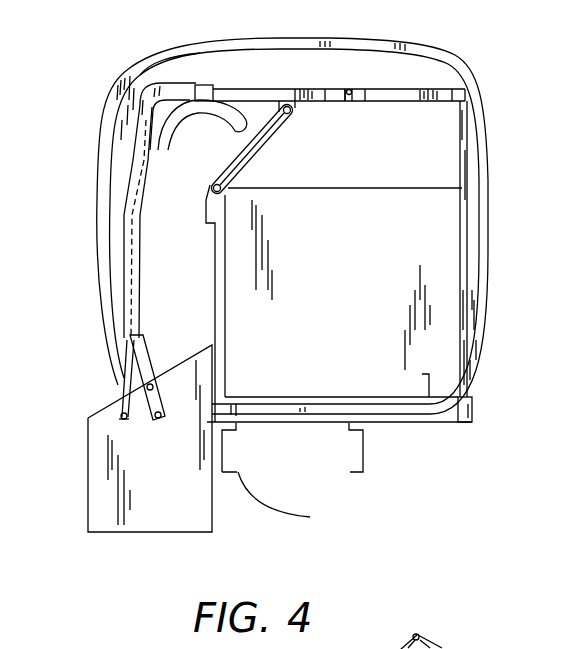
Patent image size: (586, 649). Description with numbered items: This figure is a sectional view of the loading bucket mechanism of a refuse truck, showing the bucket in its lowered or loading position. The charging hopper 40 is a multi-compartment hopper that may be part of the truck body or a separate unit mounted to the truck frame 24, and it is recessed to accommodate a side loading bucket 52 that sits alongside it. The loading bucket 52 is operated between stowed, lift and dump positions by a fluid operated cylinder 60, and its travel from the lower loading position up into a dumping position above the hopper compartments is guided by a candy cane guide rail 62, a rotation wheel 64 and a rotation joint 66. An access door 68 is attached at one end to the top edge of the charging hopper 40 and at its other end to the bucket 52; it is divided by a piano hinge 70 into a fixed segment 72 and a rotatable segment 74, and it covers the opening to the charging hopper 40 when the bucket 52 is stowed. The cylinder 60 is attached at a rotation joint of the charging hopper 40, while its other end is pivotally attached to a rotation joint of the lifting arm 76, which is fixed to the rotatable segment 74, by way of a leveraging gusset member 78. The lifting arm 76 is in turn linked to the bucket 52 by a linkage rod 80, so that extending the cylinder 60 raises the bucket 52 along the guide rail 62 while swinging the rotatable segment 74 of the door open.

The truck frame 24 is at (350, 472).
The charging hopper 40 is at (432, 188).
The loading bucket 52 is at (88, 485).
The cylinder 60 is at (262, 141).
The candy cane guide rail 62 is at (167, 113).
The rotation wheel 64 is at (150, 423).
The rotation joint 66 is at (122, 417).
The access door 68 is at (405, 103).
The piano hinge 70 is at (350, 91).
The fixed segment 72 is at (398, 88).
The rotatable segment 74 is at (277, 88).
The lifting arm 76 is at (148, 88).
The leveraging gusset member 78 is at (272, 112).
The linkage rod 80 is at (124, 367).